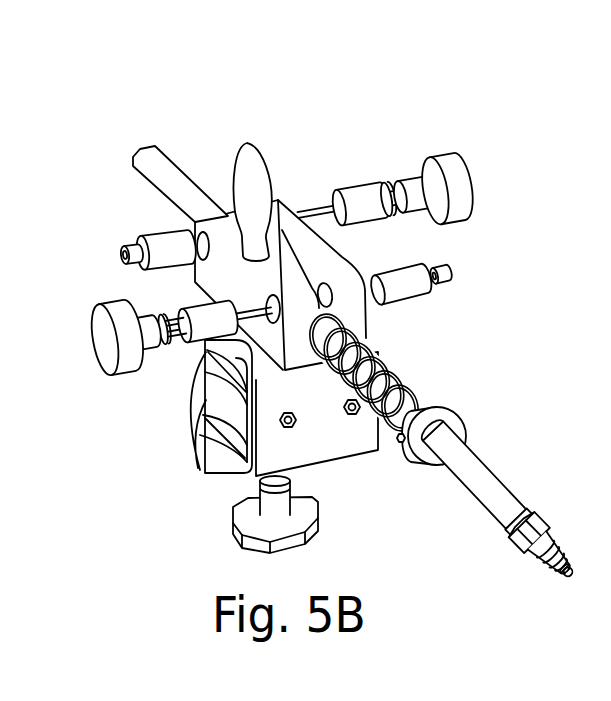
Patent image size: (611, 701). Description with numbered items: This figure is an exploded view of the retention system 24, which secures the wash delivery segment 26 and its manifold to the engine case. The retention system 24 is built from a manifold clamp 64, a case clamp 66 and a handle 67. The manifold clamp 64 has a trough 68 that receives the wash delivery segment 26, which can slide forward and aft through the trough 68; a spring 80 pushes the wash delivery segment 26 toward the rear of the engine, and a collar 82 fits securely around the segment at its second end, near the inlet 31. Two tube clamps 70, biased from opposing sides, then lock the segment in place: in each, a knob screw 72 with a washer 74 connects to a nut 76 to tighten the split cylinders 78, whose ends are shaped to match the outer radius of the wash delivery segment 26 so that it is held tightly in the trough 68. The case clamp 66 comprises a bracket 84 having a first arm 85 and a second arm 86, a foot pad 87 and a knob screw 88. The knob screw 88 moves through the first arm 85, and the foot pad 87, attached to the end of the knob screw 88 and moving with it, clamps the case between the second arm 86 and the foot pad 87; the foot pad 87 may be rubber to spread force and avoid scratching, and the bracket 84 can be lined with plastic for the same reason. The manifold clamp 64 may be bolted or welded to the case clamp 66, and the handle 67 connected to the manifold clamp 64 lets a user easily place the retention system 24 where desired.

The retention system 24 is at (421, 122).
The wash delivery segment 26 is at (472, 495).
The inlet 31 is at (570, 574).
The manifold clamp 64 is at (491, 248).
The case clamp 66 is at (274, 467).
The handle 67 is at (258, 160).
The trough 68 is at (340, 258).
The tube clamp 70 is at (512, 161).
The knob screw 72 is at (452, 160).
The washer 74 is at (389, 190).
The nut 76 is at (132, 246).
The split cylinder 78 is at (352, 208).
The spring 80 is at (392, 360).
The collar 82 is at (466, 418).
The bracket 84 is at (349, 440).
The first arm 85 is at (240, 432).
The second arm 86 is at (238, 370).
The foot pad 87 is at (238, 402).
The knob screw 88 is at (320, 523).